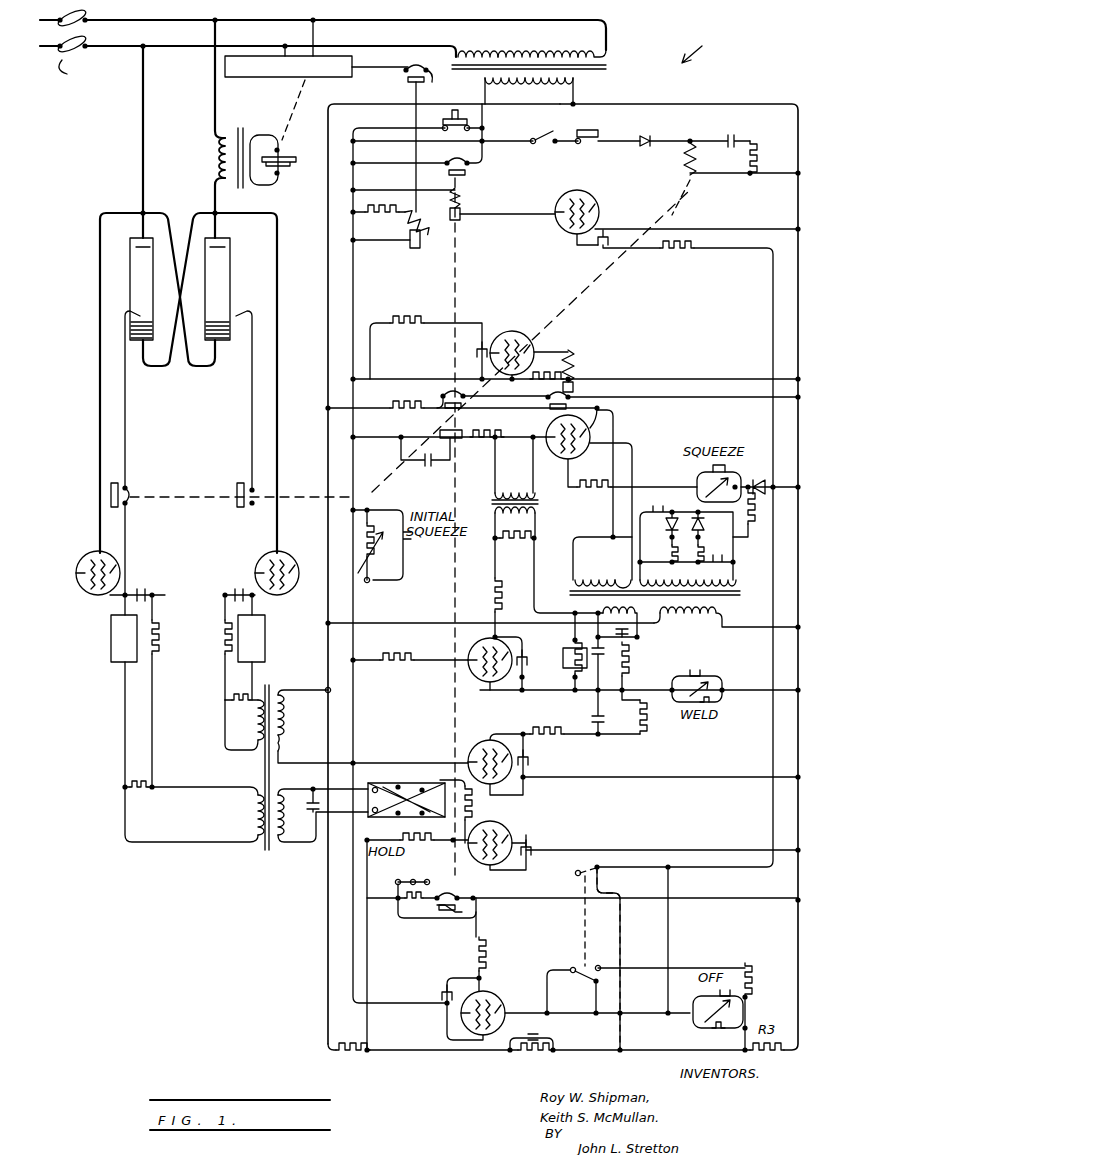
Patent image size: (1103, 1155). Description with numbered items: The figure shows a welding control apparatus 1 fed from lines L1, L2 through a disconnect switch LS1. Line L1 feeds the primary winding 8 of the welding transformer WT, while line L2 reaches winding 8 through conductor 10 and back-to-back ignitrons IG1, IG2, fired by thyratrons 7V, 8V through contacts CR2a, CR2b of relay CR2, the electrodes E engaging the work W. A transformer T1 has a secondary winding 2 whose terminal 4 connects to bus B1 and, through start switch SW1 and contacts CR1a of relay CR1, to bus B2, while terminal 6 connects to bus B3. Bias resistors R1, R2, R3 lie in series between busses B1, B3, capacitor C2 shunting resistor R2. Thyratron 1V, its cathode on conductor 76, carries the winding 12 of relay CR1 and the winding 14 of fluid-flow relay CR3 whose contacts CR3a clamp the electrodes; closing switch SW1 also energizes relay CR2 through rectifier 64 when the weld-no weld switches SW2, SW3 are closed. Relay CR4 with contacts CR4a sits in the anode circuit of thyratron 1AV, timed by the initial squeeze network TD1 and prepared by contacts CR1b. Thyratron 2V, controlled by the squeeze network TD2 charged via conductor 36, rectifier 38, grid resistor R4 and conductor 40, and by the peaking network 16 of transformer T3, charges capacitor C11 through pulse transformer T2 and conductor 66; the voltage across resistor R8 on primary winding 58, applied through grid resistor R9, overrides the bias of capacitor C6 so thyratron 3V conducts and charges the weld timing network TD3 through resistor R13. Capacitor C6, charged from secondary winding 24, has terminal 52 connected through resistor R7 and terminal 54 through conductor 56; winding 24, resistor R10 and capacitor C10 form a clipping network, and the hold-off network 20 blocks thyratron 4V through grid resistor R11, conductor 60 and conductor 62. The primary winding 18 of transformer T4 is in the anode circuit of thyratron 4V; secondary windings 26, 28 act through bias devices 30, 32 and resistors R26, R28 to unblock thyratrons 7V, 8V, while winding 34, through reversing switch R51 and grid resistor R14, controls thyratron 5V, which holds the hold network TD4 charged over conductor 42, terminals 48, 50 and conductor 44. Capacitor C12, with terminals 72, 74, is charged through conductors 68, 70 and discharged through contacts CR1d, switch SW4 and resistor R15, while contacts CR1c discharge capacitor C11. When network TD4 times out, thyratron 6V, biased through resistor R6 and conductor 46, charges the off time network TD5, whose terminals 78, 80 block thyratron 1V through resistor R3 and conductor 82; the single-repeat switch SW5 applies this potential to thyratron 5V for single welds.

The supply line L1 is at (110, 28).
The supply line L2 is at (110, 54).
The disconnect switch LS1 is at (75, 75).
The conductor 10 is at (151, 129).
The primary winding of welding transformer 8 is at (215, 163).
The welding transformer WT is at (246, 130).
The work W is at (288, 161).
The electrodes E is at (288, 175).
The ignitron IG1 is at (125, 279).
The ignitron IG2 is at (235, 272).
The contacts of relay CR2 CR2a is at (130, 485).
The contacts of relay CR2 CR2b is at (250, 485).
The firing thyratron 7V is at (76, 556).
The firing thyratron 8V is at (304, 550).
The blocking bias producing device 30 is at (108, 648).
The blocking bias producing device 32 is at (268, 633).
The biasing resistor R26 is at (132, 793).
The secondary winding of transformer T4 26 is at (248, 814).
The biasing resistor R28 is at (230, 703).
The secondary winding of transformer T4 28 is at (253, 750).
The weld current flow controlling transformer T4 is at (272, 685).
The primary winding of transformer T4 18 is at (288, 722).
The secondary winding of transformer T4 34 is at (302, 820).
The bus B1 is at (340, 97).
The bus B2 is at (362, 283).
The bus B3 is at (796, 125).
The bias resistor R1 is at (358, 1044).
The transformer T1 is at (612, 72).
The welding control apparatus 1 is at (697, 49).
The terminal of secondary winding 4 is at (488, 100).
The secondary winding of transformer T1 2 is at (520, 86).
The terminal of secondary winding 6 is at (570, 106).
The contacts of relay CR3 CR3a is at (432, 83).
The fluid flow controlling relay CR3 is at (414, 178).
The start switch SW1 is at (440, 128).
The weld-no weld switch SW3 is at (530, 139).
The weld-no weld switch SW2 is at (600, 128).
The rectifier 64 is at (695, 138).
The contacts of relay CR1 CR1a is at (440, 156).
The relay CR1 is at (460, 272).
The energizing winding of relay CR1 12 is at (465, 200).
The energizing winding of relay CR3 14 is at (420, 250).
The thyratron 1V is at (555, 196).
The conductor 76 is at (682, 224).
The thyratron 1AV is at (528, 318).
The relay CR2 is at (580, 300).
The control relay CR4 is at (578, 368).
The contacts of relay CR4 CR4a is at (578, 393).
The conductor 66 is at (672, 402).
The bias resistor R3 is at (415, 416).
The contacts of relay CR1 CR1b is at (437, 394).
The conductor 40 is at (490, 406).
The contacts of relay CR1 CR1c is at (455, 442).
The capacitor C11 is at (415, 470).
The thyratron 2V is at (555, 468).
The pulse producing transformer T2 is at (540, 503).
The primary winding of transformer T2 58 is at (500, 520).
The resistor R8 is at (505, 546).
The grid resistor R9 is at (500, 600).
The clipping network 56 is at (550, 571).
The grid resistor R4 is at (595, 496).
The squeeze timing network TD2 is at (694, 474).
The rectifier 38 is at (755, 476).
The conductor 36 is at (768, 500).
The peaking network 16 is at (736, 550).
The transformer T3 is at (738, 588).
The secondary winding of transformer T3 24 is at (560, 617).
The current limiting resistor R13 is at (395, 652).
The thyratron 3V is at (478, 684).
The terminal of capacitor C6 54 is at (586, 638).
The capacitor C6 is at (602, 658).
The terminal of capacitor C6 52 is at (640, 634).
The resistor R7 is at (630, 656).
The weld timing network TD3 is at (700, 668).
The conductor 62 is at (735, 695).
The hold off bias producing network 20 is at (587, 693).
The capacitor C10 is at (610, 704).
The resistor R10 is at (644, 728).
The grid resistor R11 is at (528, 724).
The thyratron 4V is at (470, 745).
The conductor 60 is at (630, 770).
The reversing switch R51 is at (405, 774).
The grid resistor R14 is at (472, 805).
The terminal of network TD4 50 is at (418, 828).
The terminal of network TD4 48 is at (450, 834).
The thyratron 5V is at (520, 824).
The conductor 44 is at (612, 846).
The switch SW4 is at (412, 878).
The hold timing network TD4 is at (436, 878).
The conductor 68 is at (421, 900).
The resistor R15 is at (419, 890).
The terminal of capacitor C12 72 is at (468, 884).
The contacts of relay CR1 CR1d is at (450, 918).
The terminal of capacitor C12 74 is at (385, 917).
The conductor 46 is at (480, 912).
The conductor 70 is at (550, 904).
The conductor 42 is at (360, 938).
The capacitor C12 is at (408, 943).
The grid resistor R6 is at (486, 950).
The single-repeat switch SW5 is at (572, 937).
The thyratron 6V is at (510, 984).
The conductor 82 is at (668, 936).
The bias resistor R2 is at (514, 1052).
The capacitor C2 is at (540, 1036).
The positive terminal of network TD5 78 is at (746, 1016).
The off time timing network TD5 is at (718, 1009).
The negative terminal of network TD5 80 is at (688, 1024).
The initial squeeze timing network TD1 is at (404, 572).